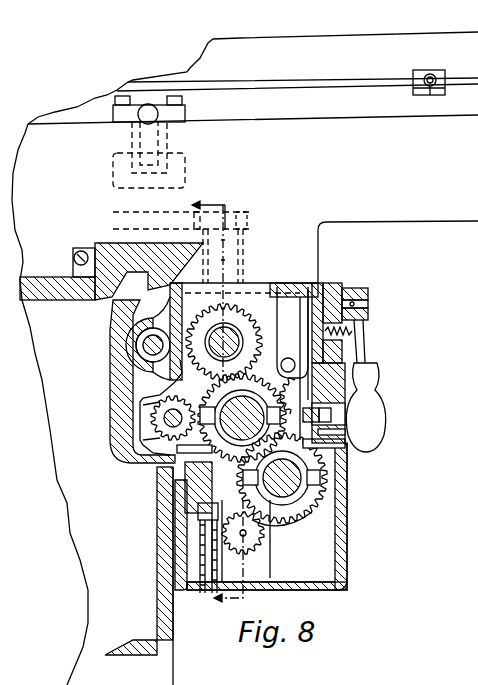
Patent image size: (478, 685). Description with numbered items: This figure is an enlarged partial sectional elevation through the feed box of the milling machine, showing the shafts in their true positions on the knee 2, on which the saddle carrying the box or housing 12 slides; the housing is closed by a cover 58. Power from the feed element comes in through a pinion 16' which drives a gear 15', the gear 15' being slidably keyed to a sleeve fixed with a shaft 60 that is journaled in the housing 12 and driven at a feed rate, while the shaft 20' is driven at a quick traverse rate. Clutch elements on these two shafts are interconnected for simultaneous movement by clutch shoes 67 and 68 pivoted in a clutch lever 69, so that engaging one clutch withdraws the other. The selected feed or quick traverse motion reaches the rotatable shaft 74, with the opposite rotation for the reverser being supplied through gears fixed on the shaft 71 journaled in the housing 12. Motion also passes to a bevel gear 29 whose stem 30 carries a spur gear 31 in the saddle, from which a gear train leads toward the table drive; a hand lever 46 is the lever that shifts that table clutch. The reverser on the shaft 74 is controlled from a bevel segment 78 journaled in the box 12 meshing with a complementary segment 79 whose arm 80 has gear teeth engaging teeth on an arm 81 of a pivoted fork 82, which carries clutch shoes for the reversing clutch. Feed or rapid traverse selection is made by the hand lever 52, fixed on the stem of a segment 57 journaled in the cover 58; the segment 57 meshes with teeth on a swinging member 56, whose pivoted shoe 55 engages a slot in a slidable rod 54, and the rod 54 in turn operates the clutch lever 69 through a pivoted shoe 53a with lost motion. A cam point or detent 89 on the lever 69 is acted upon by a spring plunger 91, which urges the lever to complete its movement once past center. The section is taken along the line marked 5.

The hand lever 46 is at (148, 104).
The section line 5 is at (225, 397).
The spur gear 31 is at (244, 217).
The stem 30 is at (228, 251).
The bevel gear 29 is at (247, 297).
The knee 2 is at (42, 277).
The segment 57 is at (326, 294).
The pivoted fork 82 is at (162, 314).
The arm 81 is at (176, 341).
The arm 80 is at (157, 372).
The shaft 74 is at (224, 342).
The swinging member 56 is at (322, 332).
The shaft 71 is at (293, 357).
The shaft 20' is at (242, 409).
The clutch shoe 67 is at (276, 392).
The segment 79 is at (163, 416).
The bevel segment 78 is at (163, 433).
The cam point 89 is at (200, 488).
The housing 12 is at (166, 499).
The spring plunger 91 is at (200, 515).
The pivoted shoe 53a is at (347, 403).
The slidable rod 54 is at (313, 418).
The hand lever 52 is at (381, 418).
The shoe 55 is at (345, 433).
The clutch lever 69 is at (327, 458).
The shaft 60 is at (323, 483).
The gear 15' is at (314, 512).
The clutch shoe 68 is at (267, 533).
The pinion 16' is at (251, 540).
The cover 58 is at (342, 565).